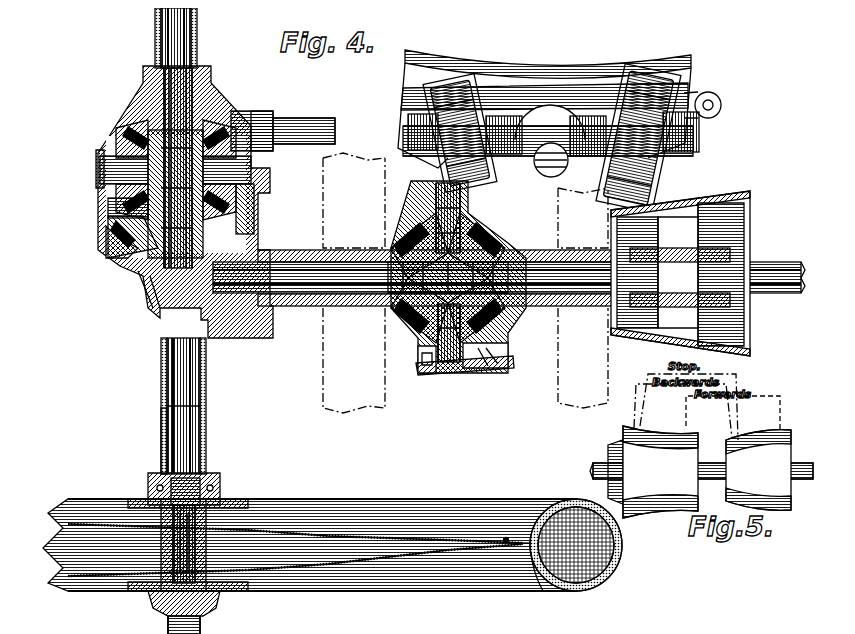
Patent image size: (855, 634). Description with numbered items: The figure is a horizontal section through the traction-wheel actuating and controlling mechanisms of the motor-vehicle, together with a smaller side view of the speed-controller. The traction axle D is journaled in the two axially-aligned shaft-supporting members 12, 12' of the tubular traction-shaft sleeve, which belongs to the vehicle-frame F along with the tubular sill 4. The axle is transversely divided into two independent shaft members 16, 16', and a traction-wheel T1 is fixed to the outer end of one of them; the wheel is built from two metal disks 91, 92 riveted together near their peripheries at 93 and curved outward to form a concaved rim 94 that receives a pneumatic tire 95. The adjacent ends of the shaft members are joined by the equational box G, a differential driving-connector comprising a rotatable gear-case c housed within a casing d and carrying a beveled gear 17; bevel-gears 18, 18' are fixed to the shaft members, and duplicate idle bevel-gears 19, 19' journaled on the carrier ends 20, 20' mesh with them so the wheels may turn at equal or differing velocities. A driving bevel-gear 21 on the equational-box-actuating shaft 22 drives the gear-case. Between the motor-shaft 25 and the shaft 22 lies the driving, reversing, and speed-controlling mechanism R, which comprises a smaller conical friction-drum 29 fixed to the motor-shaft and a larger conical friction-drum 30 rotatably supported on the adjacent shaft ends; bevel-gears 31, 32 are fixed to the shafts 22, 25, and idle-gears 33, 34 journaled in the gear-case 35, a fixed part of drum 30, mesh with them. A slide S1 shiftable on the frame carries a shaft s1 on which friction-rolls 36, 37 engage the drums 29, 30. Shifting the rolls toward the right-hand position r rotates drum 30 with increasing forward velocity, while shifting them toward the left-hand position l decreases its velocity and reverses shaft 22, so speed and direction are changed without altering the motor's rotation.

In FIG. 4, the shaft-supporting member 12 is at (158, 38).
In FIG. 4, the shaft member 16 is at (196, 38).
In FIG. 4, the bevel-gear 18 is at (185, 202).
In FIG. 4, the beveled gear 17 is at (140, 268).
In FIG. 4, the bevel-gear 18' is at (123, 249).
In FIG. 4, the idle bevel-gear 19 is at (114, 170).
In FIG. 4, the idle bevel-gear 19' is at (235, 159).
In FIG. 4, the carrier end 20 is at (103, 169).
In FIG. 4, the carrier end 20' is at (249, 195).
In FIG. 4, the driving bevel-gear 21 is at (262, 240).
In FIG. 4, the equational-box-actuating shaft 22 is at (330, 300).
In FIG. 4, the motor-shaft 25 is at (752, 260).
In FIG. 5, the motor-shaft 25 is at (790, 470).
In FIG. 4, the conical friction-drum 29 is at (742, 308).
In FIG. 5, the conical friction-drum 29 is at (758, 470).
In FIG. 4, the conical friction-drum 30 is at (472, 360).
In FIG. 5, the conical friction-drum 30 is at (660, 472).
In FIG. 4, the bevel-gear 31 is at (395, 315).
In FIG. 4, the bevel-gear 32 is at (495, 316).
In FIG. 4, the idle-gear 33 is at (410, 345).
In FIG. 4, the idle-gear 34 is at (398, 230).
In FIG. 4, the gear-case 35 is at (485, 352).
In FIG. 4, the friction-roll 36 is at (623, 80).
In FIG. 4, the friction-roll 37 is at (458, 78).
In FIG. 4, the tubular sill 4 is at (328, 122).
In FIG. 4, the vehicle-frame F is at (283, 122).
In FIG. 4, the equational box G is at (88, 176).
In FIG. 4, the gear-case c is at (100, 205).
In FIG. 4, the casing d is at (96, 228).
In FIG. 4, the traction axle D is at (135, 410).
In FIG. 4, the shaft-supporting member 12' is at (143, 441).
In FIG. 4, the shaft member 16' is at (160, 406).
In FIG. 4, the driving, reversing, and speed-controlling mechanism R is at (405, 345).
In FIG. 4, the slide S1 is at (559, 109).
In FIG. 4, the shaft s1 is at (528, 142).
In FIG. 4, the traction-wheel T1 is at (356, 500).
In FIG. 4, the metal disk 91 is at (410, 530).
In FIG. 4, the metal disk 92 is at (387, 560).
In FIG. 4, the rivet joint 93 is at (498, 530).
In FIG. 4, the concaved rim 94 is at (523, 565).
In FIG. 4, the pneumatic tire 95 is at (596, 572).
In FIG. 5, the left-hand position l is at (679, 407).
In FIG. 5, the right-hand position r is at (714, 411).